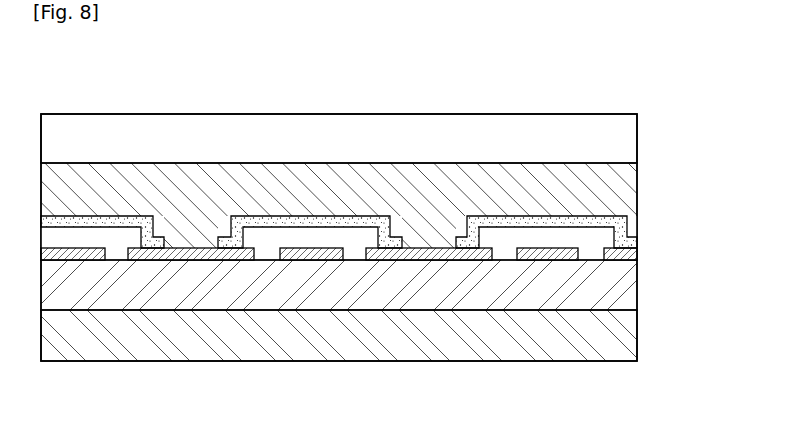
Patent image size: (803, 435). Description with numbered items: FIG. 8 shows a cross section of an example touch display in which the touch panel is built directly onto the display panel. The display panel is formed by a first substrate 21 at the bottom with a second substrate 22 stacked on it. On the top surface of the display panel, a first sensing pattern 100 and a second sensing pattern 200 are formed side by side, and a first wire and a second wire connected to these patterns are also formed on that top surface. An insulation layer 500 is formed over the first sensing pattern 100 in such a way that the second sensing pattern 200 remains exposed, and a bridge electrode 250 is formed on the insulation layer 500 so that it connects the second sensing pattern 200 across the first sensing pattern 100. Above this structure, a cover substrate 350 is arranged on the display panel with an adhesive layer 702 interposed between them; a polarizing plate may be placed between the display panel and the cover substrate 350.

The first substrate 21 is at (628, 334).
The second substrate 22 is at (628, 283).
The first sensing pattern 100 is at (312, 255).
The second sensing pattern 200 is at (193, 257).
The bridge electrode 250 is at (277, 225).
The cover substrate 350 is at (625, 139).
The insulation layer 500 is at (352, 238).
The adhesive layer 702 is at (624, 190).